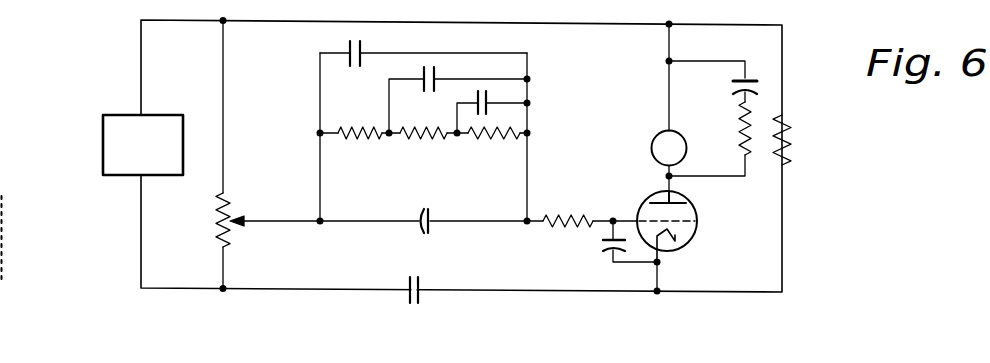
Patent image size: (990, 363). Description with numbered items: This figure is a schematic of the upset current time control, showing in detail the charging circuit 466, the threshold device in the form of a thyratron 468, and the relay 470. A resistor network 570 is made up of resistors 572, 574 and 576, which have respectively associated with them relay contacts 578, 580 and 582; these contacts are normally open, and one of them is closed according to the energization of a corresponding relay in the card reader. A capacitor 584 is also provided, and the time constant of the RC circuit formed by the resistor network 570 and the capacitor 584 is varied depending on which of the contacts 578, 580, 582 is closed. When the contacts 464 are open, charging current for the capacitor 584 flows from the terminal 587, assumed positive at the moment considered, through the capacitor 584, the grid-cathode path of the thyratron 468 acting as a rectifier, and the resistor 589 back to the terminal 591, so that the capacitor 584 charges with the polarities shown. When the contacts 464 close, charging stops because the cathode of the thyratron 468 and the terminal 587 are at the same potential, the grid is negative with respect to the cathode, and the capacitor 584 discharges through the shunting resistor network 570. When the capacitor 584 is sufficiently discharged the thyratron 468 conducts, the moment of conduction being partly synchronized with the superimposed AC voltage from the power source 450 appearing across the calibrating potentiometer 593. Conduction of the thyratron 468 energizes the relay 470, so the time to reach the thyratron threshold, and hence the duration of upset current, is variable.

The power source 450 is at (115, 113).
The terminal 591 is at (226, 22).
The resistor network 570 is at (298, 82).
The relay contacts 582 is at (362, 42).
The relay contacts 580 is at (433, 68).
The relay contacts 578 is at (480, 93).
The resistor 576 is at (352, 138).
The resistor 574 is at (420, 138).
The resistor 572 is at (492, 138).
The capacitor 584 is at (431, 207).
The calibrating potentiometer 593 is at (218, 225).
The terminal 587 is at (226, 288).
The contacts 464 is at (420, 276).
The charging circuit 466 is at (590, 113).
The relay 470 is at (680, 143).
The thyratron 468 is at (698, 216).
The resistor 589 is at (792, 150).